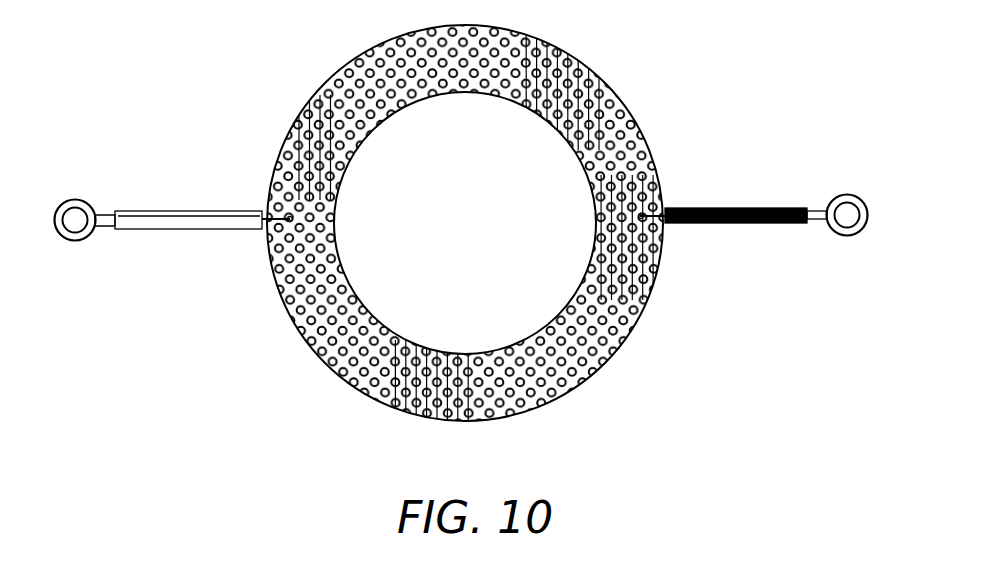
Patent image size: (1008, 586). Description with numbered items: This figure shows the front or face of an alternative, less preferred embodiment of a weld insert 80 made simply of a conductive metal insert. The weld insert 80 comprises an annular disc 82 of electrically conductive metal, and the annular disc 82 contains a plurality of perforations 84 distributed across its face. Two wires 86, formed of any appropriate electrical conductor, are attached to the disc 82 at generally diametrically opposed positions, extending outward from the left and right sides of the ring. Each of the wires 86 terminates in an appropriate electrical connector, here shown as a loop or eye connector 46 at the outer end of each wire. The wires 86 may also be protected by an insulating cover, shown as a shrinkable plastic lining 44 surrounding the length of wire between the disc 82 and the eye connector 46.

The weld insert 80 is at (624, 77).
The annular disc 82 is at (348, 62).
The perforations 84 is at (368, 130).
The wires 86 is at (262, 243).
The shrinkable plastic lining 44 is at (148, 230).
The loop or eye connector 46 is at (88, 203).